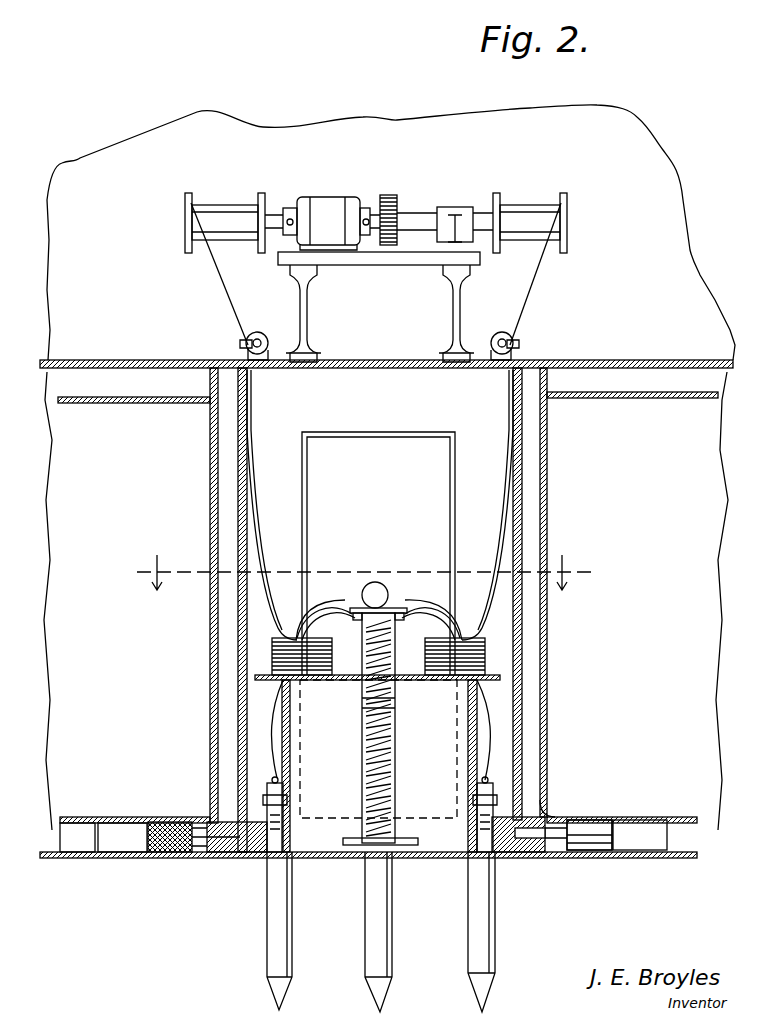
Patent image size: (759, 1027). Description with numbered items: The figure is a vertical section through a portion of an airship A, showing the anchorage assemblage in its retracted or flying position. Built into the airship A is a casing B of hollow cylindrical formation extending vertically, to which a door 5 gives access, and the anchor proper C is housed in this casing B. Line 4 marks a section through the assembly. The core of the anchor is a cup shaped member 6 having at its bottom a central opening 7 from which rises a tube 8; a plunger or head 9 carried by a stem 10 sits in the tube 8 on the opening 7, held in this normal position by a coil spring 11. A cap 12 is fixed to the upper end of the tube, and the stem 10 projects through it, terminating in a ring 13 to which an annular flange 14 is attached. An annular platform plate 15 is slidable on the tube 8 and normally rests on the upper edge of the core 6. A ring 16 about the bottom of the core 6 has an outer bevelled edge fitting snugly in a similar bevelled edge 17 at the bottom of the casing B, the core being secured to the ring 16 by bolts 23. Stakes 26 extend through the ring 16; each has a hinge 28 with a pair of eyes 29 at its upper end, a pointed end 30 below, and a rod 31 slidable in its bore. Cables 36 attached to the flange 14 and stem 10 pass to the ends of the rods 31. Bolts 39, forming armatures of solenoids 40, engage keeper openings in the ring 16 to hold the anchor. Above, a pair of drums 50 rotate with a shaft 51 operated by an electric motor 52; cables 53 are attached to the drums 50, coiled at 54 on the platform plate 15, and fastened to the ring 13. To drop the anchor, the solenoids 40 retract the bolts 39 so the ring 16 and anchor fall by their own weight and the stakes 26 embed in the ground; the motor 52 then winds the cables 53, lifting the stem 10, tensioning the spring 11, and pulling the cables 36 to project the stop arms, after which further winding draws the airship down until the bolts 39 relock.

The section line 4- 4 is at (622, 580).
The door 5 is at (378, 625).
The cup shaped member 6 is at (320, 858).
The central opening 7 is at (355, 858).
The tube 8 is at (397, 720).
The plunger or head 9 is at (365, 893).
The stem 10 is at (362, 704).
The coil spring 11 is at (388, 730).
The cap 12 is at (377, 666).
The ring 13 is at (373, 585).
The annular flange 14 is at (400, 612).
The platform plate 15 is at (343, 676).
The ring 16 is at (240, 857).
The bevelled edge 17 is at (540, 803).
The bolts 23 is at (500, 777).
The stakes 26 is at (482, 940).
The hinge 28 is at (510, 797).
The eyes 29 is at (492, 740).
The pointed end 30 is at (490, 984).
The rod 31 is at (490, 768).
The cables 36 is at (497, 700).
The bolts 39 is at (535, 833).
The solenoids 40 is at (152, 857).
The drums 50 is at (225, 218).
The shaft 51 is at (413, 220).
The electric motor 52 is at (325, 210).
The cables 53 is at (548, 292).
The coil 54 is at (473, 633).
The airship portion A is at (389, 467).
The casing B is at (210, 455).
The anchor C is at (512, 855).